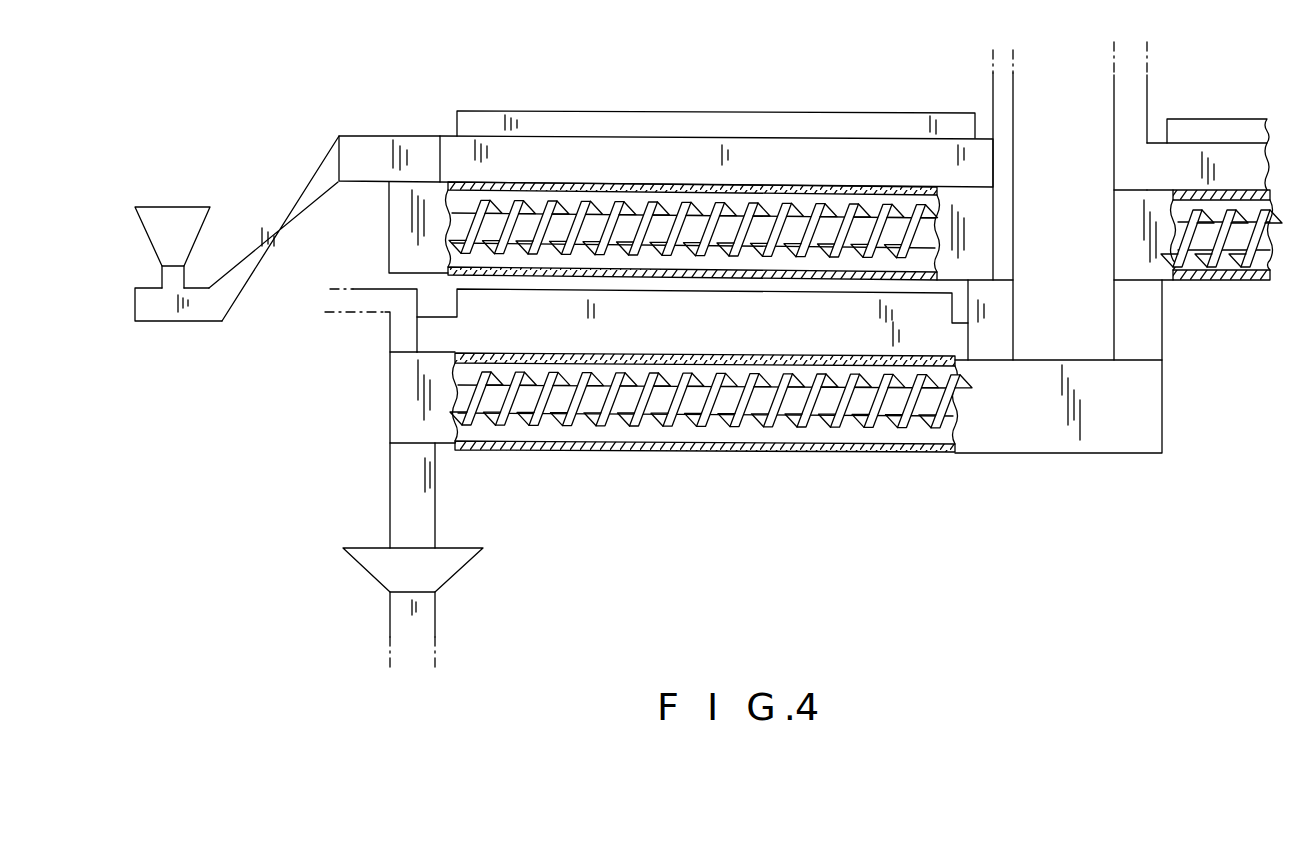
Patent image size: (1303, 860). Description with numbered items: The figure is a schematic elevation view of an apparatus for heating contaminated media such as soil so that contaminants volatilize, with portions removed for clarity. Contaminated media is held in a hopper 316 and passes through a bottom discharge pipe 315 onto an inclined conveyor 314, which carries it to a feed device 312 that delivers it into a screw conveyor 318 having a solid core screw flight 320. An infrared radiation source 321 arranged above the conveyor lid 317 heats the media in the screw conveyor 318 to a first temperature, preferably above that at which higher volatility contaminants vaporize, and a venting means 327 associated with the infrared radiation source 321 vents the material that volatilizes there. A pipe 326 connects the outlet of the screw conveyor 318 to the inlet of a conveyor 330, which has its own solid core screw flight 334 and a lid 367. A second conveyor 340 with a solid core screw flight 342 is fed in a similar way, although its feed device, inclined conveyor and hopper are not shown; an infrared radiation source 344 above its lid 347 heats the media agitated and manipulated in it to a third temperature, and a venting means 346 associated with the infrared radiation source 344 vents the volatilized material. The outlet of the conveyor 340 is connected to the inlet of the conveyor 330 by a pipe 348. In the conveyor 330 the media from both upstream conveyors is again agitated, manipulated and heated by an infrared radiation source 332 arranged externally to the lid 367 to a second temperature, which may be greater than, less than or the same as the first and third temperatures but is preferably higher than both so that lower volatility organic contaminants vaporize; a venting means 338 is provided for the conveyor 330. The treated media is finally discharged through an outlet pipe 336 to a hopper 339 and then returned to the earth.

The feed device 312 is at (382, 153).
The inclined conveyor 314 is at (290, 210).
The bottom discharge pipe 315 is at (168, 276).
The hopper 316 is at (182, 225).
The conveyor lid 317 is at (453, 153).
The screw conveyor 318 is at (417, 228).
The solid core screw flight 320 is at (760, 232).
The infrared radiation source 321 is at (554, 122).
The pipe 326 is at (998, 328).
The venting means 327 is at (1003, 113).
The conveyor 330 is at (1127, 417).
The infrared radiation source 332 is at (527, 303).
The solid core screw flight 334 is at (715, 410).
The outlet pipe 336 is at (415, 505).
The venting means 338 is at (402, 320).
The hopper 339 is at (418, 627).
The conveyor 340 is at (1133, 230).
The solid core screw flight 342 is at (1221, 258).
The infrared radiation source 344 is at (1212, 127).
The venting means 346 is at (1128, 130).
The lid 347 is at (1175, 168).
The pipe 348 is at (1138, 331).
The lid 367 is at (513, 342).